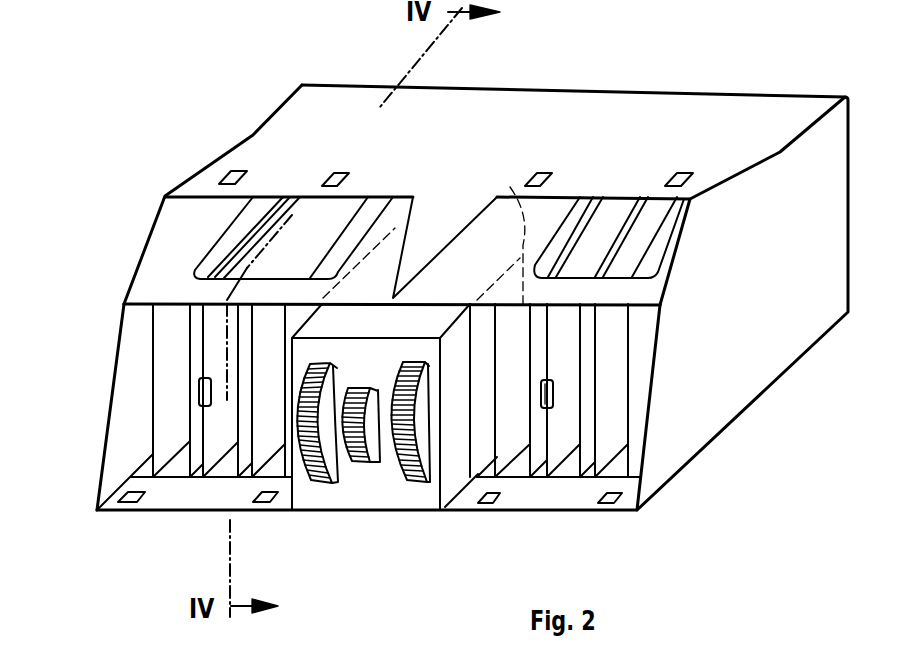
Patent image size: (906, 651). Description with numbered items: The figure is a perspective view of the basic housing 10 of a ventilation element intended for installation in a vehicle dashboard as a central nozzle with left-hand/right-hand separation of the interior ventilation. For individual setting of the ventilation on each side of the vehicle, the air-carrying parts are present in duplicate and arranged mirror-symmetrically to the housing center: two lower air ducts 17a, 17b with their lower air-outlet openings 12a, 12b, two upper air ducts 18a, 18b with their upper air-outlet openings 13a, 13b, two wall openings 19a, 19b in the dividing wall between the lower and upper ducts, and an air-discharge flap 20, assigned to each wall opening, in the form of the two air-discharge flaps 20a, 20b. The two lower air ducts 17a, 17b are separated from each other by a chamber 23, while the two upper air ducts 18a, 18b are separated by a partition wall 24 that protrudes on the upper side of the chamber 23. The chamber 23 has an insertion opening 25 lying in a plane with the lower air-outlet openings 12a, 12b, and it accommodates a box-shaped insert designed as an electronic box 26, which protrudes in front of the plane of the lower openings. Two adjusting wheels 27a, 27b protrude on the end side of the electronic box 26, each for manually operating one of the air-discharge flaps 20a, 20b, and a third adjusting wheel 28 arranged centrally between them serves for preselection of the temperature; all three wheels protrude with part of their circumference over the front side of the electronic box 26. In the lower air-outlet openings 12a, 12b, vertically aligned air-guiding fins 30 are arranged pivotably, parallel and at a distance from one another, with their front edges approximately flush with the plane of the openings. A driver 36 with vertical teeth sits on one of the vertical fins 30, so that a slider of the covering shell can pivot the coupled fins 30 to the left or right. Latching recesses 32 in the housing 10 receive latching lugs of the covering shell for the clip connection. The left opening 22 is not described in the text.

The basic housing 10 is at (748, 400).
The lower air-outlet opening 12a is at (140, 475).
The lower air-outlet opening 12b is at (640, 492).
The upper air-outlet opening 13a is at (145, 235).
The upper air-outlet opening 13b is at (668, 262).
The lower air duct 17a is at (140, 342).
The lower air duct 17b is at (637, 357).
The upper air duct 18a is at (172, 203).
The upper air duct 18b is at (480, 223).
The wall opening 19a is at (222, 232).
The wall opening 19b is at (653, 293).
The air-discharge flap 20 is at (690, 210).
The air-discharge flap 20a is at (295, 213).
The air-discharge flap 20b is at (607, 223).
The left air opening 22 is at (205, 262).
The chamber 23 is at (510, 187).
The partition wall 24 is at (447, 215).
The insertion opening 25 is at (476, 447).
The electronic box 26 is at (328, 493).
The adjusting wheel 27a is at (323, 438).
The adjusting wheel 27b is at (420, 455).
The third adjusting wheel 28 is at (360, 453).
The air-guiding fins 30 is at (157, 388).
The latching recesses 32 is at (233, 172).
The driver 36 is at (196, 405).